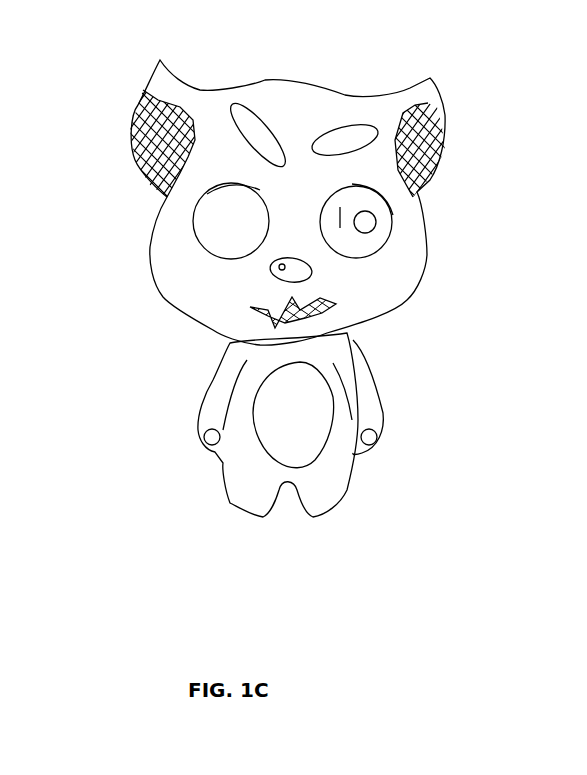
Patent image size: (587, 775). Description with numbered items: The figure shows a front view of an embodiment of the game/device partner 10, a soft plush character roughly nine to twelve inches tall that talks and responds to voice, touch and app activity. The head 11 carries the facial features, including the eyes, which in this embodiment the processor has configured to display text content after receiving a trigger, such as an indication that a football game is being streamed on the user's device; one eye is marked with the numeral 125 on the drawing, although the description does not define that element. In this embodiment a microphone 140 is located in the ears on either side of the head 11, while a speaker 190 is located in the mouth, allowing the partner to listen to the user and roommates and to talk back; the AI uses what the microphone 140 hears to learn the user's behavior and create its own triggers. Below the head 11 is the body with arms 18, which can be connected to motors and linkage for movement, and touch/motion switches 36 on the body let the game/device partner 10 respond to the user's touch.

The game/device partner 10 is at (118, 81).
The head 11 is at (322, 113).
The microphone 140 is at (433, 147).
The eye 125 is at (370, 228).
The speaker 190 is at (312, 313).
The arms 18 is at (367, 410).
The touch/motion switches 36 is at (205, 440).